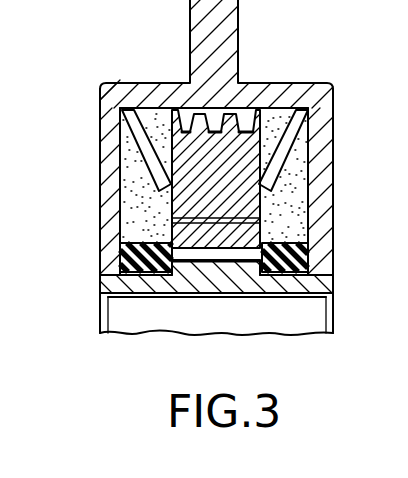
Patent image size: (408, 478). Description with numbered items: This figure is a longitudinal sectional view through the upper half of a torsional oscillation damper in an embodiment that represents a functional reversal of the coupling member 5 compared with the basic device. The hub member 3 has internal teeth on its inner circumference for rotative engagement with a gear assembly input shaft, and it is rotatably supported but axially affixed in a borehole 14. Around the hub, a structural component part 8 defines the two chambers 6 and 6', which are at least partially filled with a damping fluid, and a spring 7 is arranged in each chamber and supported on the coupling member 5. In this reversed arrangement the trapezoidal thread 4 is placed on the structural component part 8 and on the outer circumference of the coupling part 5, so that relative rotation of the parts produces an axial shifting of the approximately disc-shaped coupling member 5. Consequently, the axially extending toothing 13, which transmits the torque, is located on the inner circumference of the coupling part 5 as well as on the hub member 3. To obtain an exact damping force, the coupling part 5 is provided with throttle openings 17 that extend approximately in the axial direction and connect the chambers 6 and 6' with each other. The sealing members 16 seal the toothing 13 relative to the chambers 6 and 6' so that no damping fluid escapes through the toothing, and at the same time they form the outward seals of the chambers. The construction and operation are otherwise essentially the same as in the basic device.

The hub member 3 is at (231, 280).
The trapezoidal thread 4 is at (236, 110).
The coupling member 5 is at (243, 158).
The chamber 6 is at (112, 175).
The chamber 6' is at (326, 178).
The spring 7 is at (138, 134).
The structural component part 8 is at (322, 100).
The axially extending toothing 13 is at (187, 272).
The borehole 14 is at (104, 279).
The sealing member 16 is at (122, 256).
The throttle opening 17 is at (200, 217).